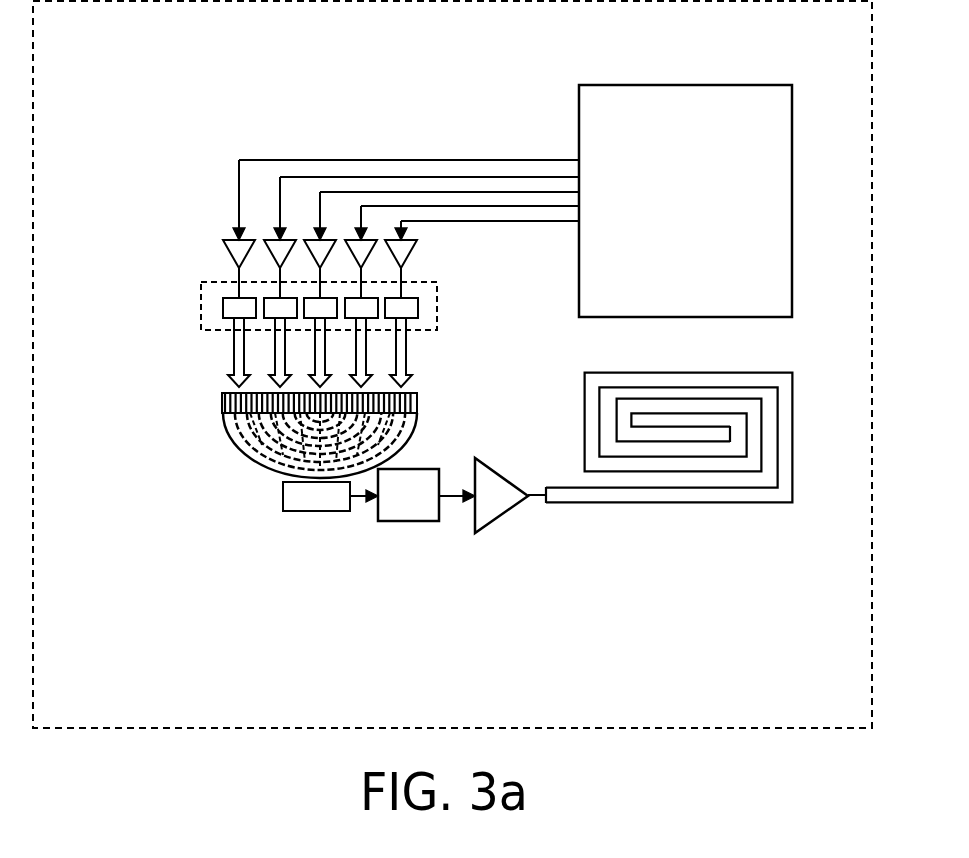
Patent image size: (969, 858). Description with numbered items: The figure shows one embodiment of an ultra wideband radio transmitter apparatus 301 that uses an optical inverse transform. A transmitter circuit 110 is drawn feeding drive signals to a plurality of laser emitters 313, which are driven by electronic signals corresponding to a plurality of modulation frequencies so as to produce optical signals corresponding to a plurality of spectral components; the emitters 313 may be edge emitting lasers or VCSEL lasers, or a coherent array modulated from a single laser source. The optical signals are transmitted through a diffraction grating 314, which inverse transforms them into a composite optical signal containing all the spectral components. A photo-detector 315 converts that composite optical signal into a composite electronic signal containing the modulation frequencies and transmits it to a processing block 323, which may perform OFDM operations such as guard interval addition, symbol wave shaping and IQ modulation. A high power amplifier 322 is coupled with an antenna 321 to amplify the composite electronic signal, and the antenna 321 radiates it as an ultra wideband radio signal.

The ultra wideband radio transmitter apparatus 301 is at (160, 699).
The transmitter circuit 110 is at (717, 282).
The laser emitters 313 is at (418, 325).
The diffraction grating 314 is at (217, 402).
The photo-detector 315 is at (287, 512).
The processing block 323 is at (397, 521).
The high power amplifier 322 is at (505, 533).
The antenna 321 is at (757, 503).